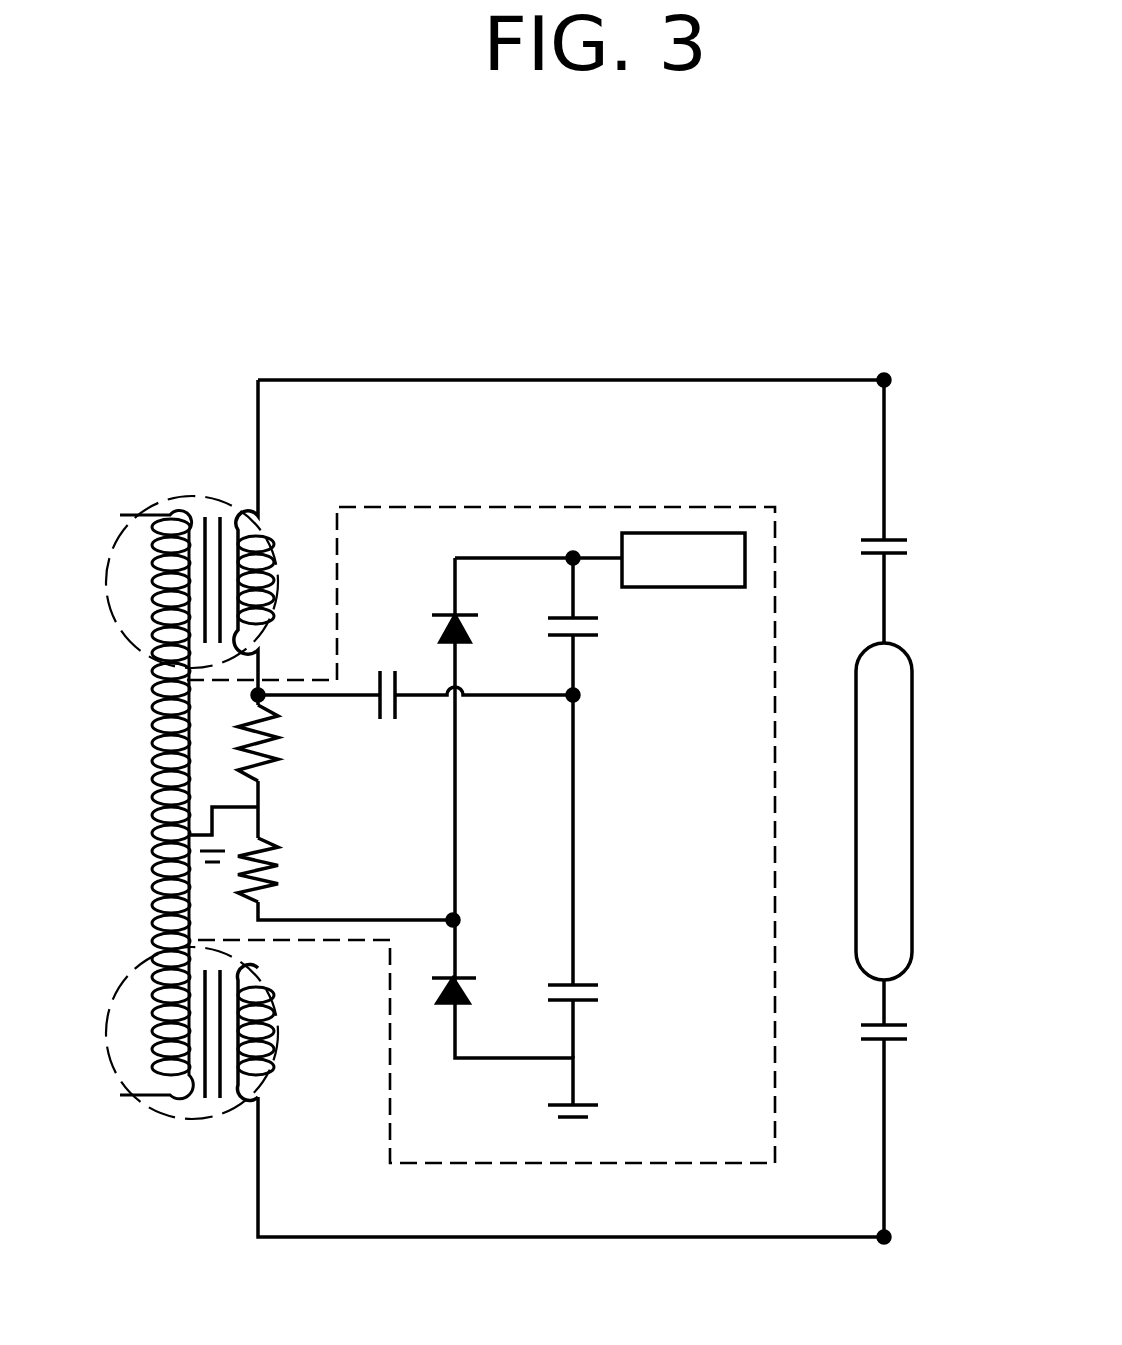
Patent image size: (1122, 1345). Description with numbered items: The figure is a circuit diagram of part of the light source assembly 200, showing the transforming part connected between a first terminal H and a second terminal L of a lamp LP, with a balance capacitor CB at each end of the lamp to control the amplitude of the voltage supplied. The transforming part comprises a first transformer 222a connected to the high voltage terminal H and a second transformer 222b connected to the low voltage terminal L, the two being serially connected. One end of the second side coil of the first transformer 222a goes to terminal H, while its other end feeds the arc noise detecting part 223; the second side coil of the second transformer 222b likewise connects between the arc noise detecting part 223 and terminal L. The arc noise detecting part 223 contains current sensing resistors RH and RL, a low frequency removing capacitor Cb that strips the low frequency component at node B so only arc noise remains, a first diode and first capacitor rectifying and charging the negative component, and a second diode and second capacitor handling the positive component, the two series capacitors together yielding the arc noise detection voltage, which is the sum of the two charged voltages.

The light source assembly 200 is at (618, 306).
The arc noise detecting part 223 is at (552, 507).
The first transformer 222a is at (177, 498).
The second transformer 222b is at (183, 1120).